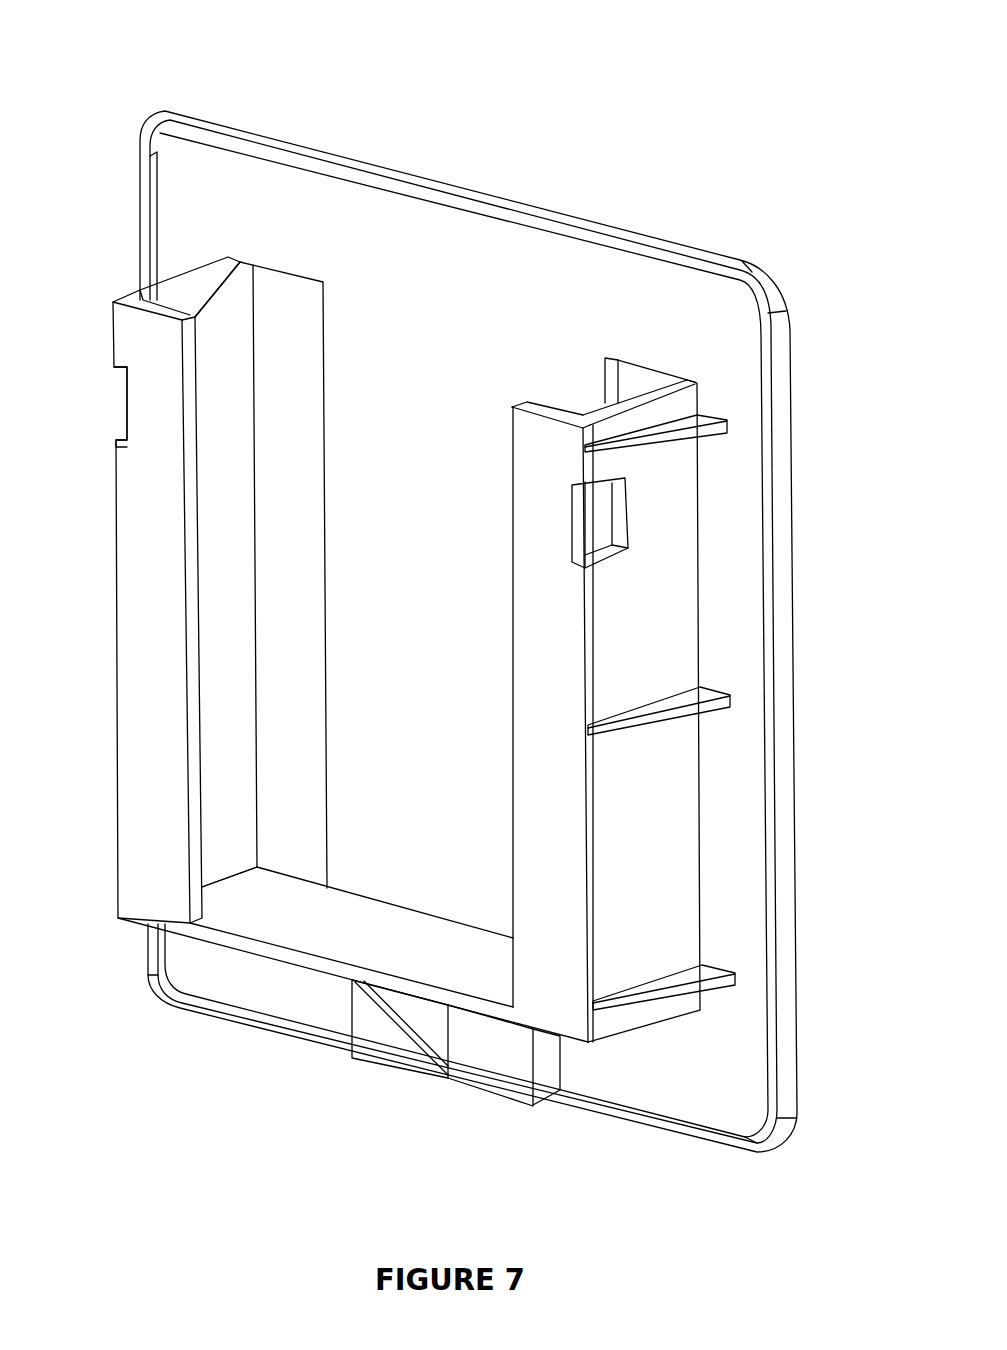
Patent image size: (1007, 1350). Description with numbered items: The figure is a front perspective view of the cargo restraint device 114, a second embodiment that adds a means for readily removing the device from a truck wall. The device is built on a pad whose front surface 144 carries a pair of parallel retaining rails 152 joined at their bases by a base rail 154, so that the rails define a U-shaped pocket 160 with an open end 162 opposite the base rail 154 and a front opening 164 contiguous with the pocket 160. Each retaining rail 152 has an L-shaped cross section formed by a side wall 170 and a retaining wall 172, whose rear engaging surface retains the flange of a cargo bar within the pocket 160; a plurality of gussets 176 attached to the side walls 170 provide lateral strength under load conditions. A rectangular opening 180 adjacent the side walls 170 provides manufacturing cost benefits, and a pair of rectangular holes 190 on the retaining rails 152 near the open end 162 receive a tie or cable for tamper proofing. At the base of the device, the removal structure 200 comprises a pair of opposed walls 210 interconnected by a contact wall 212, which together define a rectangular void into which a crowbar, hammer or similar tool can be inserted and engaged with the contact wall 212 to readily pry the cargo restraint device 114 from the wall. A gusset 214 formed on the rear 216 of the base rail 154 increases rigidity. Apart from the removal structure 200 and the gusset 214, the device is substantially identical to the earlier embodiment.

The cargo restraint device 114 is at (120, 48).
The open end 162 is at (463, 238).
The front surface 144 is at (735, 550).
The retaining wall 172 is at (135, 322).
The rectangular holes 190 is at (125, 395).
The side wall 170 is at (115, 545).
The rectangular opening 180 is at (303, 280).
The pocket 160 is at (225, 507).
The front opening 164 is at (508, 838).
The gussets 176 is at (730, 425).
The retaining rails 152 is at (680, 920).
The base rail 154 is at (230, 942).
The rear of the base rail 216 is at (255, 957).
The removal structure 200 is at (365, 1067).
The gusset 214 is at (428, 1033).
The contact wall 212 is at (502, 1073).
The opposed walls 210 is at (550, 1057).